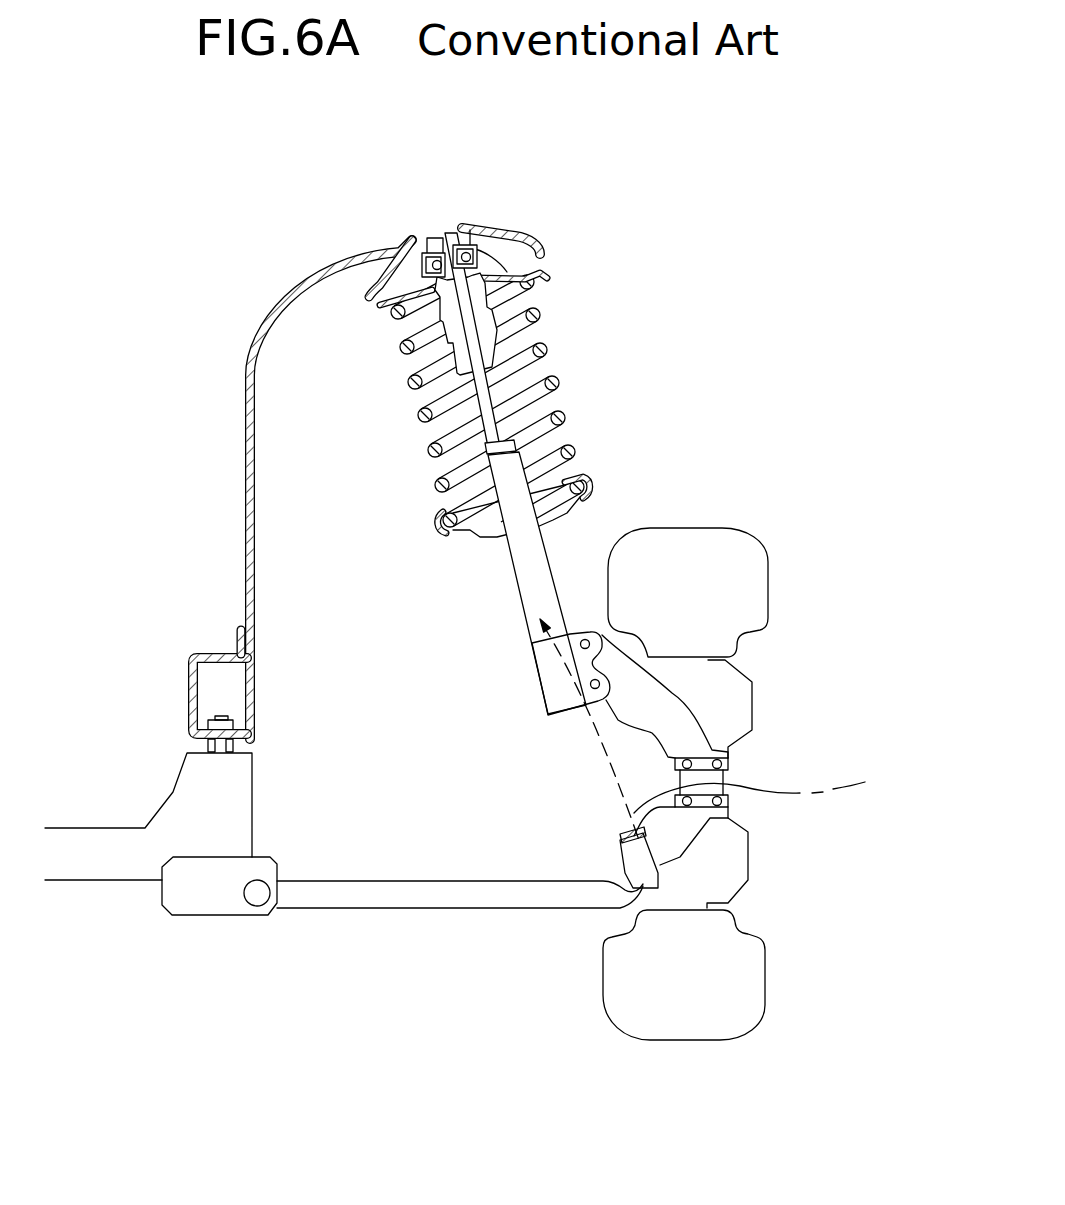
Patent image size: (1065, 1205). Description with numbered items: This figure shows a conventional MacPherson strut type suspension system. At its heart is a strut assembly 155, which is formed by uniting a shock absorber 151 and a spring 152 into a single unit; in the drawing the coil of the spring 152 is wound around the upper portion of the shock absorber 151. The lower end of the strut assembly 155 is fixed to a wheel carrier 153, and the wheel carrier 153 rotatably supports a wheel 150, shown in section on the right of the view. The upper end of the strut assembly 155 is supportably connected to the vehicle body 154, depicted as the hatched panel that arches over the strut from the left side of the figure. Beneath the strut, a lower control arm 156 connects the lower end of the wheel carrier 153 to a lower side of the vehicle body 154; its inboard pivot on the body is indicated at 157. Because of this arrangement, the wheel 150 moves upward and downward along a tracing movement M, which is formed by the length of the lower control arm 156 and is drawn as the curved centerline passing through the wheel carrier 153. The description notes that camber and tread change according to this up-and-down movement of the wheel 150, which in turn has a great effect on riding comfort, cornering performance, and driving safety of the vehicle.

The wheel 150 is at (760, 577).
The shock absorber 151 is at (520, 492).
The spring 152 is at (578, 418).
The wheel carrier 153 is at (670, 717).
The vehicle body 154 is at (246, 470).
The strut assembly 155 is at (581, 538).
The lower control arm 156 is at (420, 898).
The lower arm pivot bushing 157 is at (257, 897).
The tracing movement M is at (767, 788).